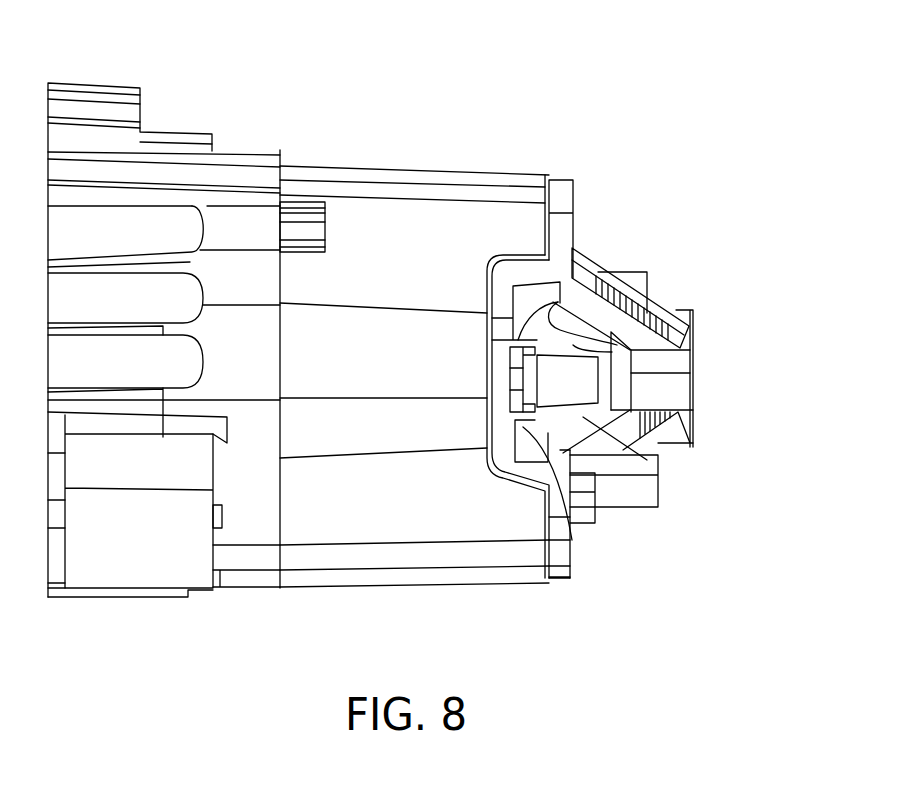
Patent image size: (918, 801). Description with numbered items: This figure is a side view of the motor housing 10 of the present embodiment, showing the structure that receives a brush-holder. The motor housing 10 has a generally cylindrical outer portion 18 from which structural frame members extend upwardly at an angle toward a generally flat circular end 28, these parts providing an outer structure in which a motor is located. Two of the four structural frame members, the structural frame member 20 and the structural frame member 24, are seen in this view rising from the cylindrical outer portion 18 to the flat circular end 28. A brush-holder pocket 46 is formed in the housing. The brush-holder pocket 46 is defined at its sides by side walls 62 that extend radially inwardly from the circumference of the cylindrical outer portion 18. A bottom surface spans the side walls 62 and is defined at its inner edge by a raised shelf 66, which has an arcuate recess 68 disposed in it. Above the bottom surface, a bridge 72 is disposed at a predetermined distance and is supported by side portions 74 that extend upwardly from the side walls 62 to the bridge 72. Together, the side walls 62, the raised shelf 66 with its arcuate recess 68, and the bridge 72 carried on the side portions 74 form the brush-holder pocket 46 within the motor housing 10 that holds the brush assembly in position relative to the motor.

The motor housing 10 is at (603, 138).
The cylindrical outer portion 18 is at (384, 168).
The structural frame member 20 is at (656, 306).
The structural frame member 24 is at (660, 450).
The flat circular end 28 is at (657, 493).
The brush-holder pocket 46 is at (575, 367).
The side wall 62 is at (557, 302).
The raised shelf 66 is at (500, 357).
The arcuate recess 68 is at (510, 384).
The bridge 72 is at (612, 396).
The side portion 74 is at (620, 347).